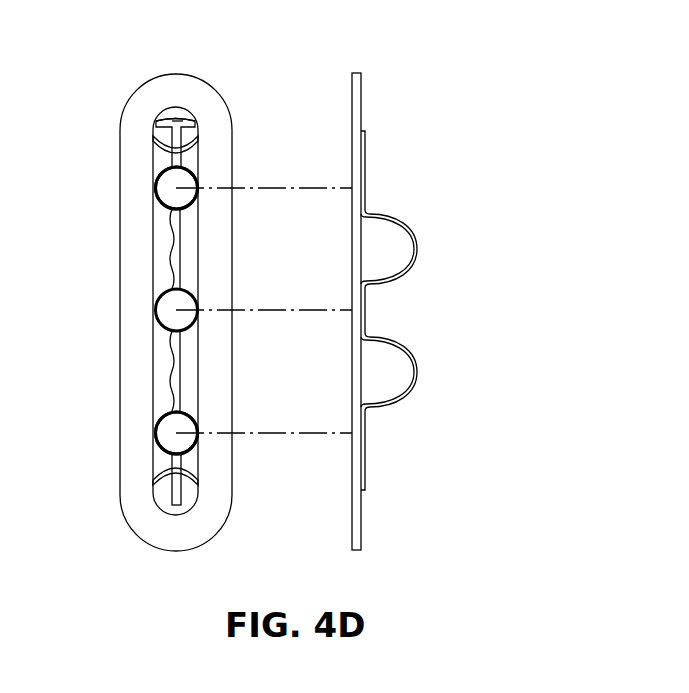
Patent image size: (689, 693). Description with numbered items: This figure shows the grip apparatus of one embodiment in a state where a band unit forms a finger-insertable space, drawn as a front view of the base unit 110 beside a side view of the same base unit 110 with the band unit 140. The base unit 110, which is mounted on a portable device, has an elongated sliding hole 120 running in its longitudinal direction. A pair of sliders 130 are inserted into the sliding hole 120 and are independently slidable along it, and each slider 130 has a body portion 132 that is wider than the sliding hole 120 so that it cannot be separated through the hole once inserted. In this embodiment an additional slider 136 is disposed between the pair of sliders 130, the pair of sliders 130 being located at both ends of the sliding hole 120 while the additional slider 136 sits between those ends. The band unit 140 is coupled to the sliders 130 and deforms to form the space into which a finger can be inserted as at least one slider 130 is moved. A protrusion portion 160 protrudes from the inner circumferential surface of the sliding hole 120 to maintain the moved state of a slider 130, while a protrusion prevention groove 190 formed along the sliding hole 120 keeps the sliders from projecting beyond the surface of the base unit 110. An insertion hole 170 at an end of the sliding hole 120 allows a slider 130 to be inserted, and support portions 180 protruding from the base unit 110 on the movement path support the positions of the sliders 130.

The base unit 110 is at (176, 78).
The sliding hole 120 is at (165, 160).
The slider 130 is at (152, 198).
The body portion 132 is at (172, 184).
The additional slider 136 is at (152, 318).
The band unit 140 is at (363, 165).
The protrusion portion 160 is at (175, 234).
The insertion hole 170 is at (178, 122).
The support portion 180 is at (187, 151).
The protrusion prevention groove 190 is at (189, 262).